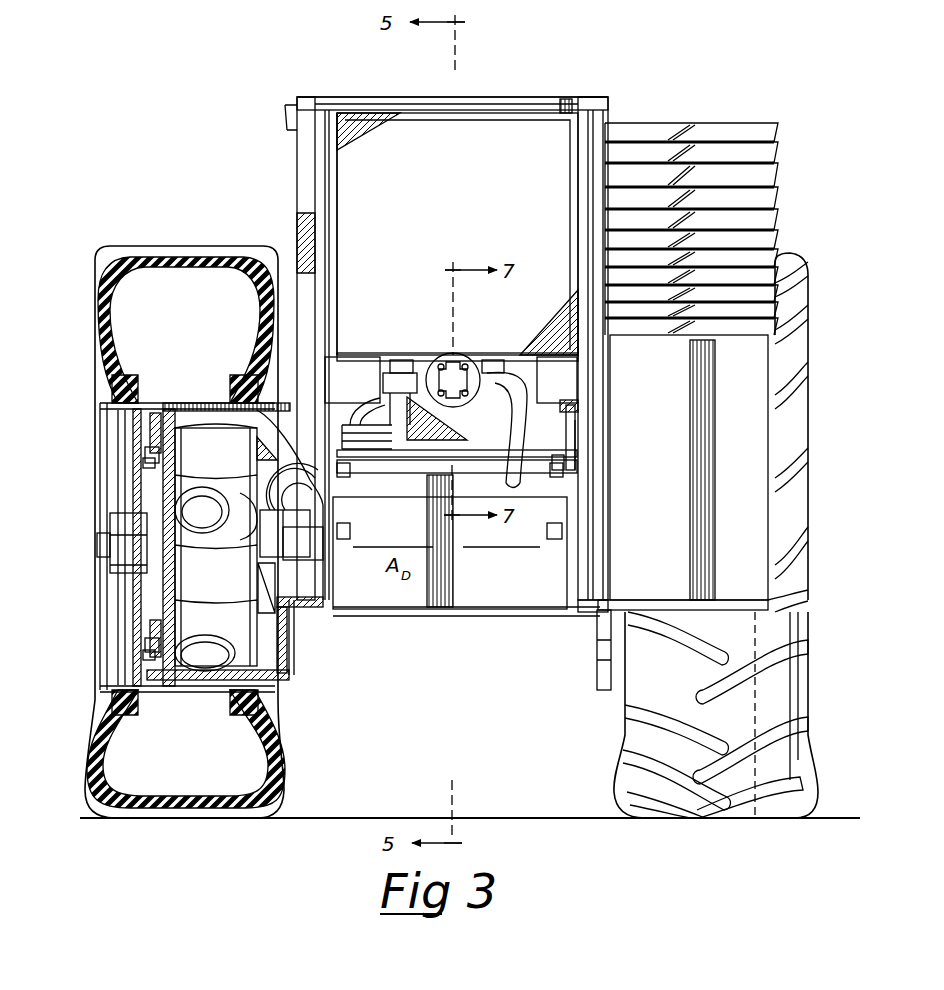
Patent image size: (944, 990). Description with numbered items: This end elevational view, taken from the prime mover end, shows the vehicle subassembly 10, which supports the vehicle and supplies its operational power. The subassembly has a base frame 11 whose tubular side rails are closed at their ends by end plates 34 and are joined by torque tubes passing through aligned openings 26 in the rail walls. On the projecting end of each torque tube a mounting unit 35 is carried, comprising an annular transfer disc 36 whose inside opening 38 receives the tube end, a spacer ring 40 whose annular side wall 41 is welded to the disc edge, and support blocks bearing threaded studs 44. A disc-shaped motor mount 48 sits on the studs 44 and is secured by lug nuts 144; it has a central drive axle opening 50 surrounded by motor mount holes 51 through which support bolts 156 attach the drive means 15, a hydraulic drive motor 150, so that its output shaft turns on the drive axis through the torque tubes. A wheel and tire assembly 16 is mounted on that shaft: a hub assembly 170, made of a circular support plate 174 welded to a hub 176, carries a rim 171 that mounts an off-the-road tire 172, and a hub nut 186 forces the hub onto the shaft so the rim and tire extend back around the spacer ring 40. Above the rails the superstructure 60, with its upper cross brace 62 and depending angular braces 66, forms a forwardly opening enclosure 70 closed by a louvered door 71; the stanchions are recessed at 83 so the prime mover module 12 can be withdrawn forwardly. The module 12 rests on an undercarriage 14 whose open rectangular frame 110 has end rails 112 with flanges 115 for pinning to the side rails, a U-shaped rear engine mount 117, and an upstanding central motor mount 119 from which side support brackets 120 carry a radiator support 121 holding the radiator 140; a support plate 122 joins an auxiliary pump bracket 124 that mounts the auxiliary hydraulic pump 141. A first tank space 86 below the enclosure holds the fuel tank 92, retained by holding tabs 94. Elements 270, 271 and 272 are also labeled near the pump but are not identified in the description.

The vehicle subassembly 10 is at (213, 70).
The base frame 11 is at (580, 616).
The prime mover module 12 is at (582, 102).
The undercarriage 14 is at (580, 454).
The drive means 15 is at (202, 662).
The wheel and tire assembly 16 is at (180, 236).
The aligned openings 26 is at (292, 610).
The end plates 34 is at (578, 405).
The mounting unit 35 is at (298, 678).
The transfer disc 36 is at (295, 660).
The inside opening 38 is at (290, 640).
The spacer ring 40 is at (204, 402).
The annular side wall 41 is at (236, 406).
The threaded stud 44 is at (148, 646).
The motor mount 48 is at (166, 412).
The drive axle opening 50 is at (152, 630).
The motor mount holes 51 is at (145, 452).
The superstructure 60 is at (300, 98).
The upper cross brace 62 is at (568, 99).
The depending angular brace 66 is at (297, 185).
The enclosure 70 is at (325, 162).
The louvered door 71 is at (700, 541).
The recess 83 is at (327, 368).
The first tank space 86 is at (524, 610).
The fuel tank 92 is at (450, 542).
The holding tabs 94 is at (352, 530).
The open rectangular frame 110 is at (563, 462).
The end rails 112 is at (420, 458).
The flanges 115 is at (344, 477).
The rear engine mount 117 is at (344, 452).
The central motor mount 119 is at (445, 420).
The side support brackets 120 is at (340, 362).
The radiator support 121 is at (496, 360).
The support plate 122 is at (578, 430).
The auxiliary pump bracket 124 is at (512, 480).
The radiator 140 is at (463, 207).
The auxiliary hydraulic pump 141 is at (456, 358).
The lug nuts 144 is at (148, 655).
The hydraulic drive motor 150 is at (218, 630).
The support bolts 156 is at (148, 462).
The hub assembly 170 is at (124, 494).
The rim 171 is at (112, 395).
The tire 172 is at (281, 764).
The support plate 174 is at (135, 432).
The hub 176 is at (112, 524).
The hub nut 186 is at (100, 556).
The valve block 270 is at (394, 373).
The fitting 271 is at (396, 360).
The mounting bar 272 is at (414, 462).